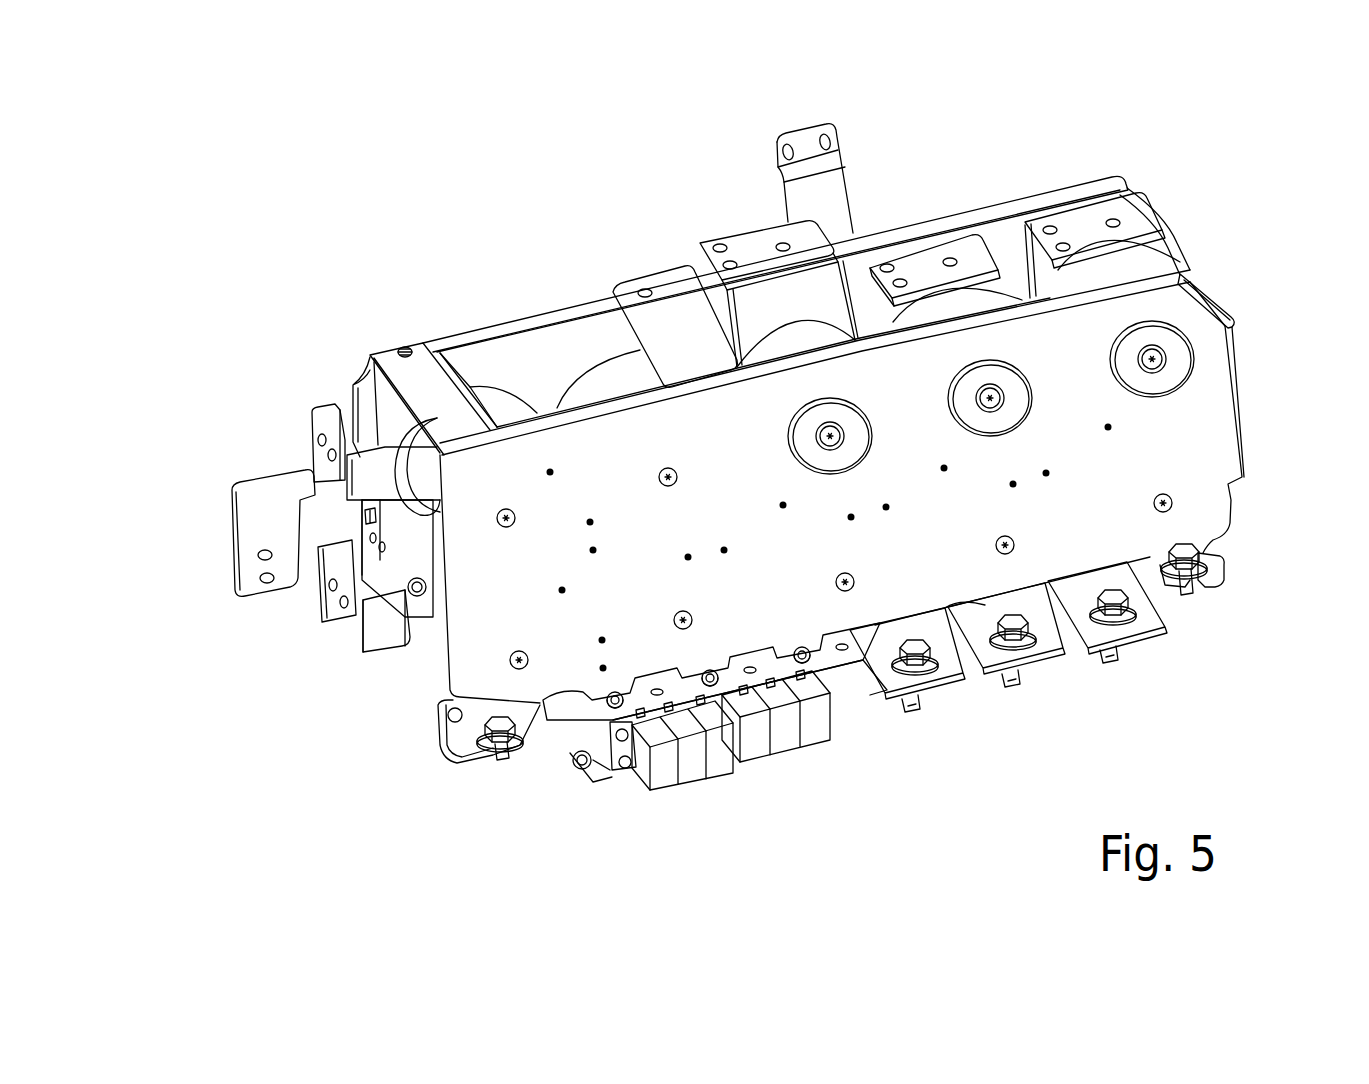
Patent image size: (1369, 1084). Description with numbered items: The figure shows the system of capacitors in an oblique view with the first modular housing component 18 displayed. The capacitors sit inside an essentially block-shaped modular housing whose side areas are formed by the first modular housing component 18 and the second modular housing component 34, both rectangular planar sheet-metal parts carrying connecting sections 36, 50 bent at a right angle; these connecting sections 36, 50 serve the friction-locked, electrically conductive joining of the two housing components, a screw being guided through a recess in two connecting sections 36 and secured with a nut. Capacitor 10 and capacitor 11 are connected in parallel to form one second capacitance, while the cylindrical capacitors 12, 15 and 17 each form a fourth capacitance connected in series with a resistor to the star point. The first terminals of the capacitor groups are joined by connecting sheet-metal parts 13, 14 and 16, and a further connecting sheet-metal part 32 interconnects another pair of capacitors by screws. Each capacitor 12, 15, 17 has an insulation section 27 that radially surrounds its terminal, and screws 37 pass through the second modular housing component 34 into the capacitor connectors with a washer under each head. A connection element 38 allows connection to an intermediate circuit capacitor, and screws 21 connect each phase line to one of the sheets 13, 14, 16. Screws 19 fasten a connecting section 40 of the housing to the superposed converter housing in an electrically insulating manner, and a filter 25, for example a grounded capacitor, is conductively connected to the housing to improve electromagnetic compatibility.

The capacitor 10 is at (500, 403).
The capacitor 11 is at (627, 378).
The capacitor 12 is at (793, 343).
The connecting sheet-metal part 13 is at (759, 253).
The connecting sheet-metal part 14 is at (926, 268).
The capacitor 15 is at (972, 303).
The connecting sheet-metal part 16 is at (1082, 223).
The capacitor 17 is at (1120, 265).
The first modular housing component 18 is at (1006, 242).
The screw 19 is at (500, 728).
The screw 21 is at (1115, 602).
The filter 25 is at (790, 733).
The insulation section 27 is at (1192, 358).
The connecting sheet-metal part 32 is at (390, 623).
The second modular housing component 34 is at (1150, 307).
The connecting section 36 is at (405, 560).
The screw 37 is at (514, 663).
The connection element 38 is at (270, 513).
The connecting section 40 is at (470, 750).
The connecting section 50 is at (418, 388).